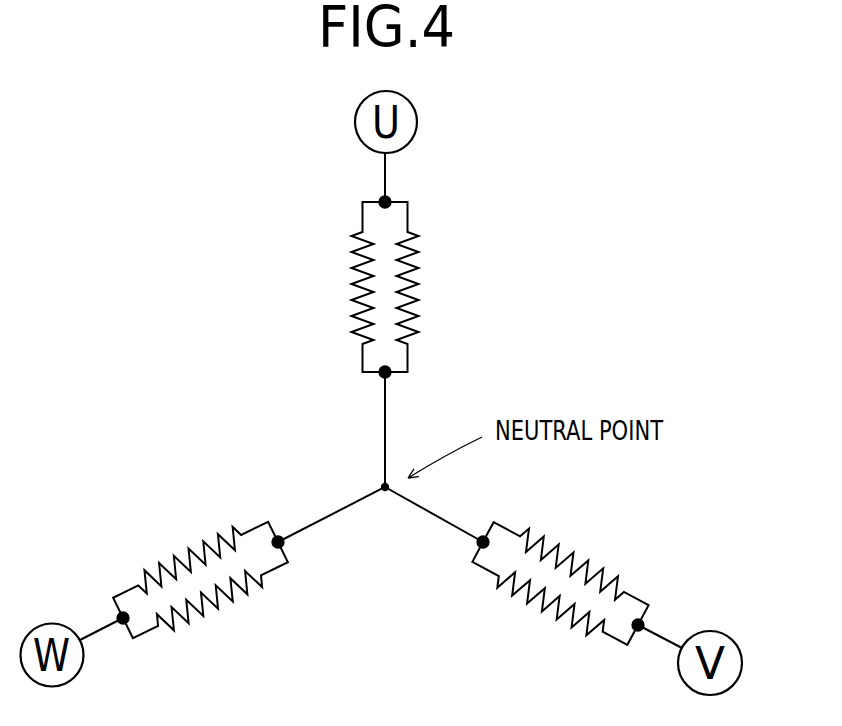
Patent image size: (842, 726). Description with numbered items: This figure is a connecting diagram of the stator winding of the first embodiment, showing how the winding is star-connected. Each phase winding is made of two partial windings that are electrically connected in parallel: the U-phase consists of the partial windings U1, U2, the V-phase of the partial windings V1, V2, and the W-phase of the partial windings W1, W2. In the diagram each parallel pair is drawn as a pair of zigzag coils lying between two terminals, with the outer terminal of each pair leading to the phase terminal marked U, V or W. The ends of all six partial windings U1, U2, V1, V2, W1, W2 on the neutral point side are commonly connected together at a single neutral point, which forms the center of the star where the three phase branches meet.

The partial winding U1 is at (437, 217).
The partial winding U2 is at (315, 221).
The partial winding V1 is at (568, 643).
The partial winding V2 is at (622, 547).
The partial winding W1 is at (132, 550).
The partial winding W2 is at (206, 643).